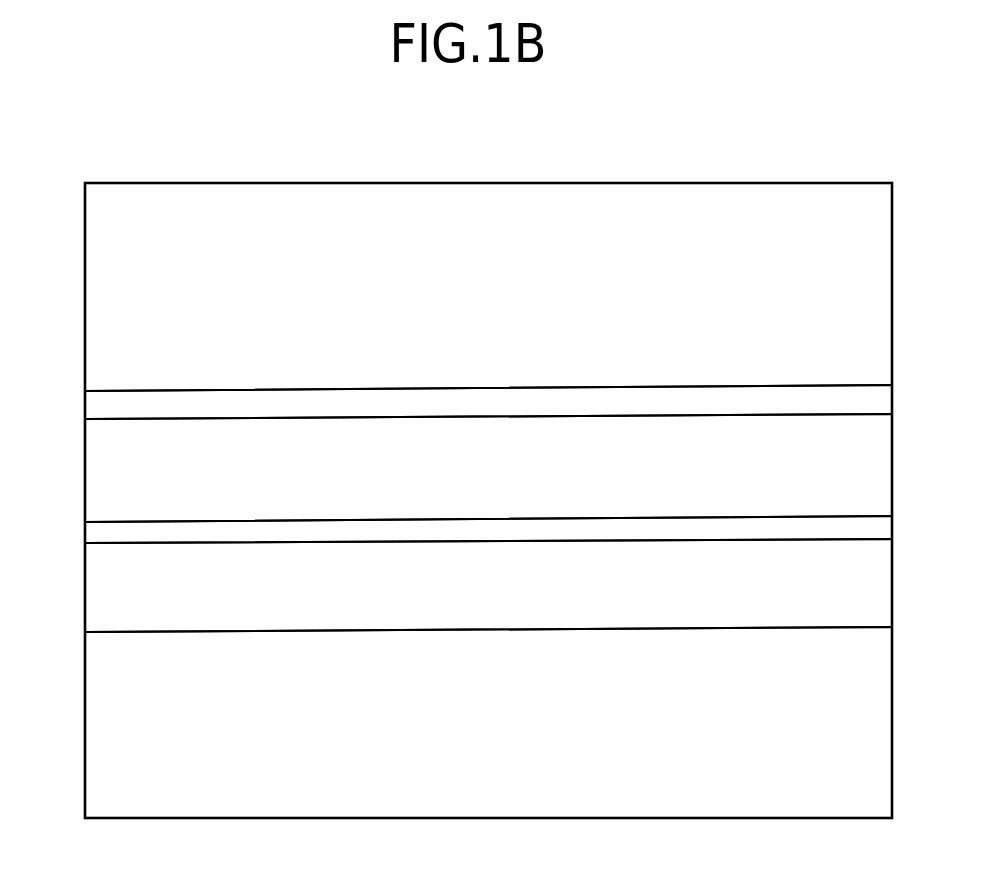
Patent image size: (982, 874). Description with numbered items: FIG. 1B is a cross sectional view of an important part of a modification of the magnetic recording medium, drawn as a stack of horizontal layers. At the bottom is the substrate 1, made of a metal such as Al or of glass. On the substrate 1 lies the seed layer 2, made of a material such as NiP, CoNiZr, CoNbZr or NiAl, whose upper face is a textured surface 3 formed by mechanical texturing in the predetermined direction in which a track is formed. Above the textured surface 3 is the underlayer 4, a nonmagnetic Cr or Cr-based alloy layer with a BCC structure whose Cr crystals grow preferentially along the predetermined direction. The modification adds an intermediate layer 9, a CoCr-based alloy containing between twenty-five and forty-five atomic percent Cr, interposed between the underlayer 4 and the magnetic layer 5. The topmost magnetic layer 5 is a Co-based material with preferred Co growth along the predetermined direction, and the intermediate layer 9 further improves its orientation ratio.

The substrate 1 is at (85, 731).
The seed layer 2 is at (85, 592).
The textured surface 3 is at (85, 536).
The underlayer 4 is at (85, 473).
The intermediate layer 9 is at (85, 407).
The magnetic recording layer 5 is at (85, 289).